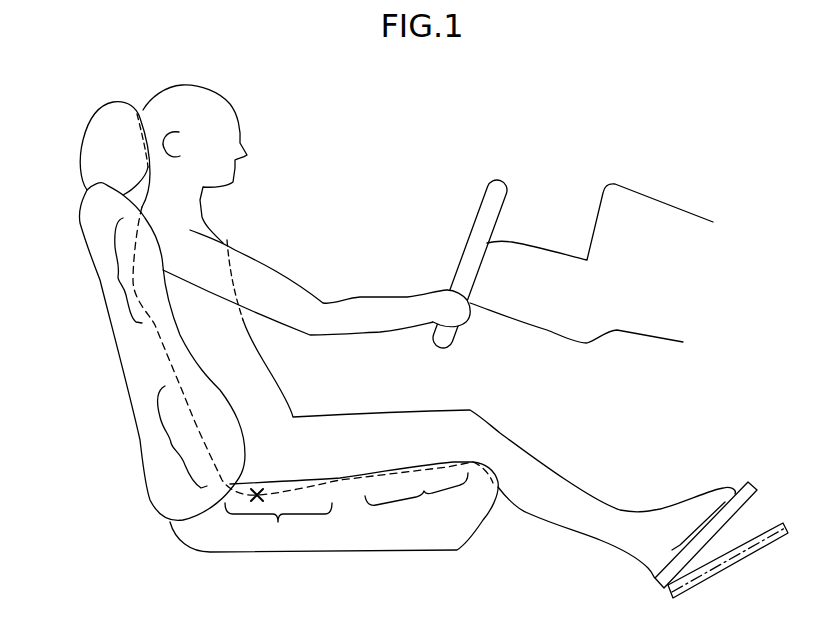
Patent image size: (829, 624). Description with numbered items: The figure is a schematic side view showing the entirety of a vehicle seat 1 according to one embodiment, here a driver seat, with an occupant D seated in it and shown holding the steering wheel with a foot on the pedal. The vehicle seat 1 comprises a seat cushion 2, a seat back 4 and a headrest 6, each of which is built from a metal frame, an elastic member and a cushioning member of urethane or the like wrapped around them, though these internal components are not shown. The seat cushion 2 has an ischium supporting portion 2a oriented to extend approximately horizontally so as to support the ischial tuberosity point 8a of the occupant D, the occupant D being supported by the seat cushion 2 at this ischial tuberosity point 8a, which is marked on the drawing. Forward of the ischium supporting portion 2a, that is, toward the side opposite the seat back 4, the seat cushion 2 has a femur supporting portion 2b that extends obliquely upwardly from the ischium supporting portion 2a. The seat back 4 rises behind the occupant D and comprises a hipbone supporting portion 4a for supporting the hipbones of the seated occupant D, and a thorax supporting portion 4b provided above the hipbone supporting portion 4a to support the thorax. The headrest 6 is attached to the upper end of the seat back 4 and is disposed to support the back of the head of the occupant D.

The vehicle seat 1 is at (68, 77).
The occupant D is at (183, 83).
The headrest 6 is at (100, 138).
The seat back 4 is at (93, 215).
The thorax supporting portion 4b is at (117, 280).
The hipbone supporting portion 4a is at (170, 442).
The ischial tuberosity point 8a is at (248, 491).
The ischium supporting portion 2a is at (278, 522).
The femur supporting portion 2b is at (424, 496).
The seat cushion 2 is at (458, 537).